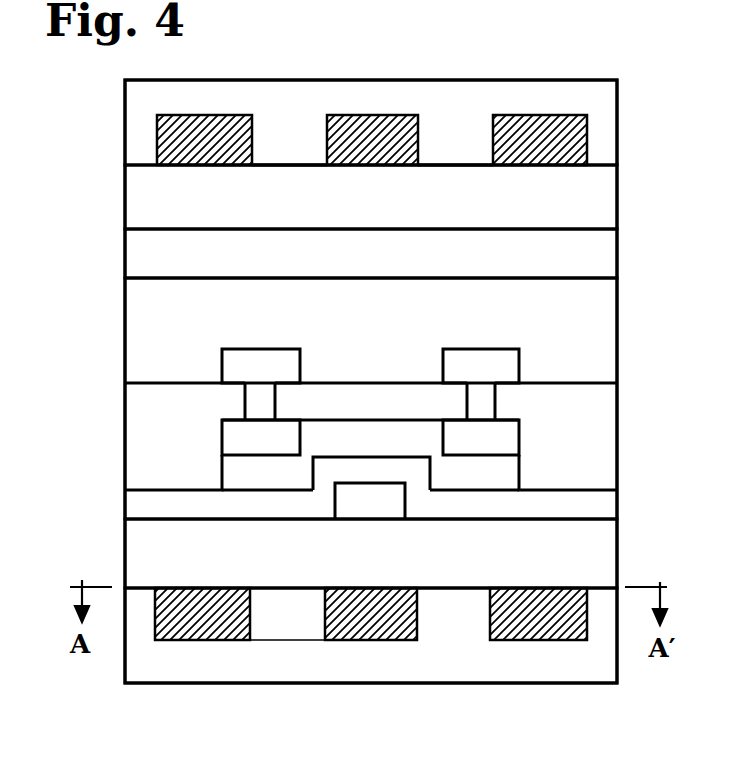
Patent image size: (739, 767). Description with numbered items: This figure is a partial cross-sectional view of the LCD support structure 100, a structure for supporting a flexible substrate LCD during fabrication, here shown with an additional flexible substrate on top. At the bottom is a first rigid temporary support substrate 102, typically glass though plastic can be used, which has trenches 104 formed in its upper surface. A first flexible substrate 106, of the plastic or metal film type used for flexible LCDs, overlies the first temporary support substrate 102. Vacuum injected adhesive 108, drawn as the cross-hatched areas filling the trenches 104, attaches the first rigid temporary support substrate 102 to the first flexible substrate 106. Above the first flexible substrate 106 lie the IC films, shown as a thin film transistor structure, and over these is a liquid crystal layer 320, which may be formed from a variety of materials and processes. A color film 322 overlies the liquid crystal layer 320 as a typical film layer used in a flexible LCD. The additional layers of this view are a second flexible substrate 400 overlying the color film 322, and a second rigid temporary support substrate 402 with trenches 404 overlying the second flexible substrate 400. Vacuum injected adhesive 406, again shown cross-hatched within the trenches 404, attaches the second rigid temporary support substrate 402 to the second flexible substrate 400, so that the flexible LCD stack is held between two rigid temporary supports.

The LCD support structure 100 is at (595, 66).
The first rigid temporary support substrate 102 is at (428, 670).
The trenches 104 is at (230, 640).
The first flexible substrate 106 is at (347, 565).
The vacuum injected adhesive 108 is at (179, 626).
The liquid crystal layer 320 is at (347, 321).
The color film 322 is at (347, 266).
The second flexible substrate 400 is at (347, 210).
The second rigid temporary support substrate 402 is at (600, 124).
The trenches 404 is at (327, 148).
The vacuum injected adhesive 406 is at (181, 153).